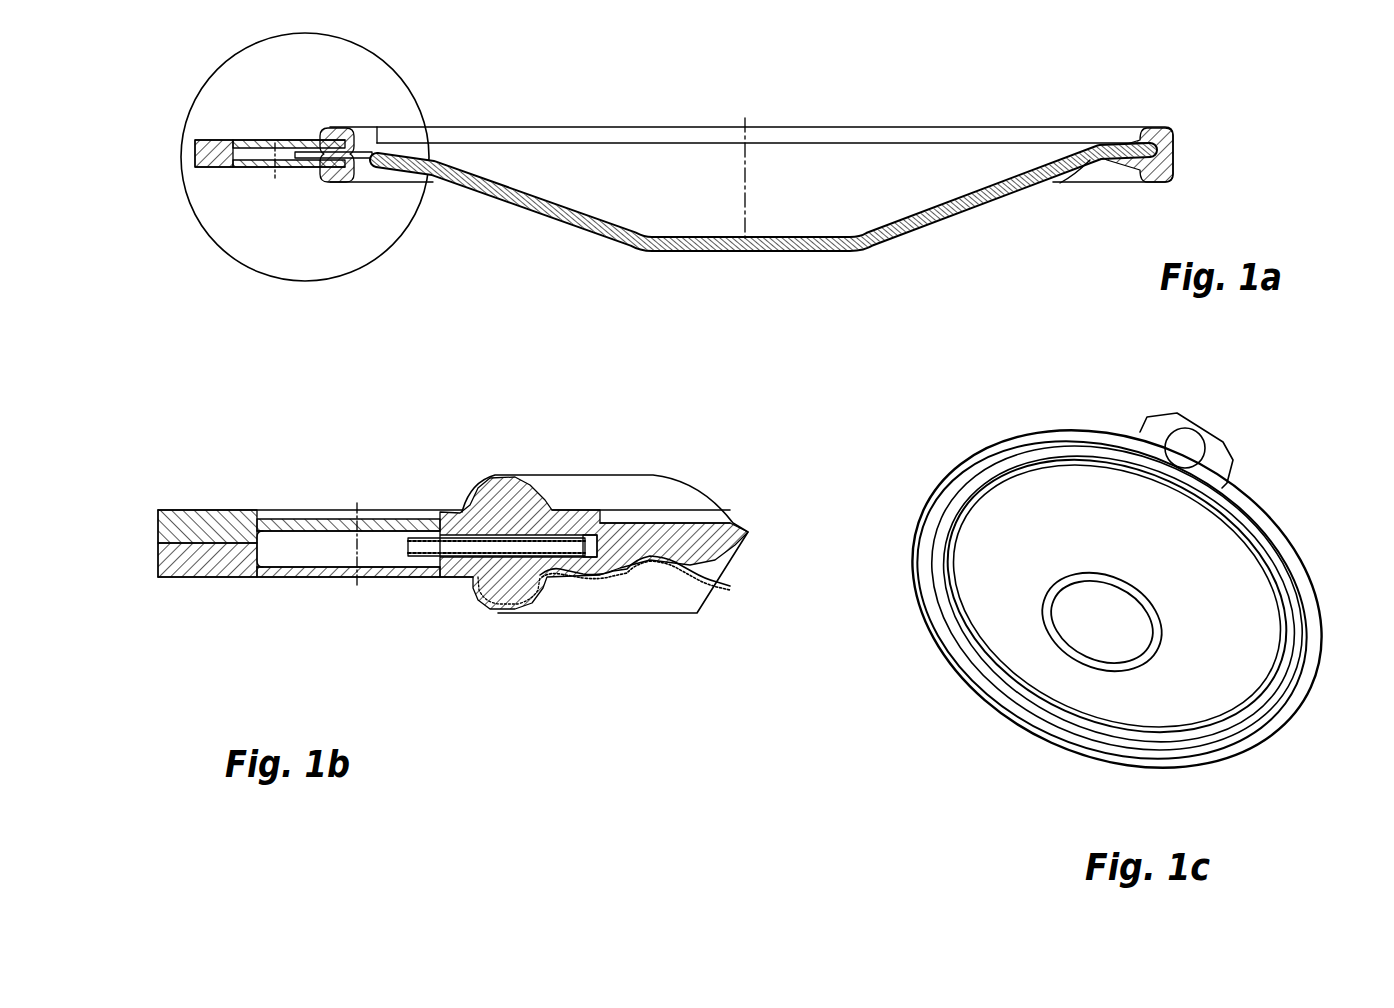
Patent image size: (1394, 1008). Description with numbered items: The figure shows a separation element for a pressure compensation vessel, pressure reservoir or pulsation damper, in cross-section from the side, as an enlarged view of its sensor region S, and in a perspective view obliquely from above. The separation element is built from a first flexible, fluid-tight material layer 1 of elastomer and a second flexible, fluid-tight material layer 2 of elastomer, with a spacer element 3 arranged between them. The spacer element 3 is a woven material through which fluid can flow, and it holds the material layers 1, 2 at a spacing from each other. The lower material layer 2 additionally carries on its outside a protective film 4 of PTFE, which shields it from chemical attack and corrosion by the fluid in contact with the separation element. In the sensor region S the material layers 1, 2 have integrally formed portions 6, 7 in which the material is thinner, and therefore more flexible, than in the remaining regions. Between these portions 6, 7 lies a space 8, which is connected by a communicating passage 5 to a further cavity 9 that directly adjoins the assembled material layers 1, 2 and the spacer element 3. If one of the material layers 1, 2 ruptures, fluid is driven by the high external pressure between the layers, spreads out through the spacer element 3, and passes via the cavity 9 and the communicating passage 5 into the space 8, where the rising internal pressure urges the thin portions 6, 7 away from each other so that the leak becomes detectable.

In FIG. 1A, the first flexible, fluid-tight material layer 1 is at (947, 200).
In FIG. 1B, the first flexible, fluid-tight material layer 1 is at (693, 540).
In FIG. 1C, the first flexible, fluid-tight material layer 1 is at (1218, 603).
In FIG. 1A, the second flexible, fluid-tight material layer 2 is at (898, 237).
In FIG. 1B, the second flexible, fluid-tight material layer 2 is at (697, 575).
In FIG. 1A, the spacer element 3 is at (1007, 197).
In FIG. 1B, the spacer element 3 is at (745, 533).
In FIG. 1A, the protective film 4 is at (820, 253).
In FIG. 1B, the protective film 4 is at (603, 570).
In FIG. 1B, the communicating passage 5 is at (513, 547).
In FIG. 1B, the portion of the material layer 6 is at (405, 520).
In FIG. 1B, the portion of the material layer 7 is at (395, 574).
In FIG. 1B, the space 8 is at (292, 553).
In FIG. 1B, the further cavity 9 is at (603, 540).
In FIG. 1A, the sensor region S is at (276, 192).
In FIG. 1B, the sensor region S is at (333, 478).
In FIG. 1C, the sensor region S is at (1232, 440).